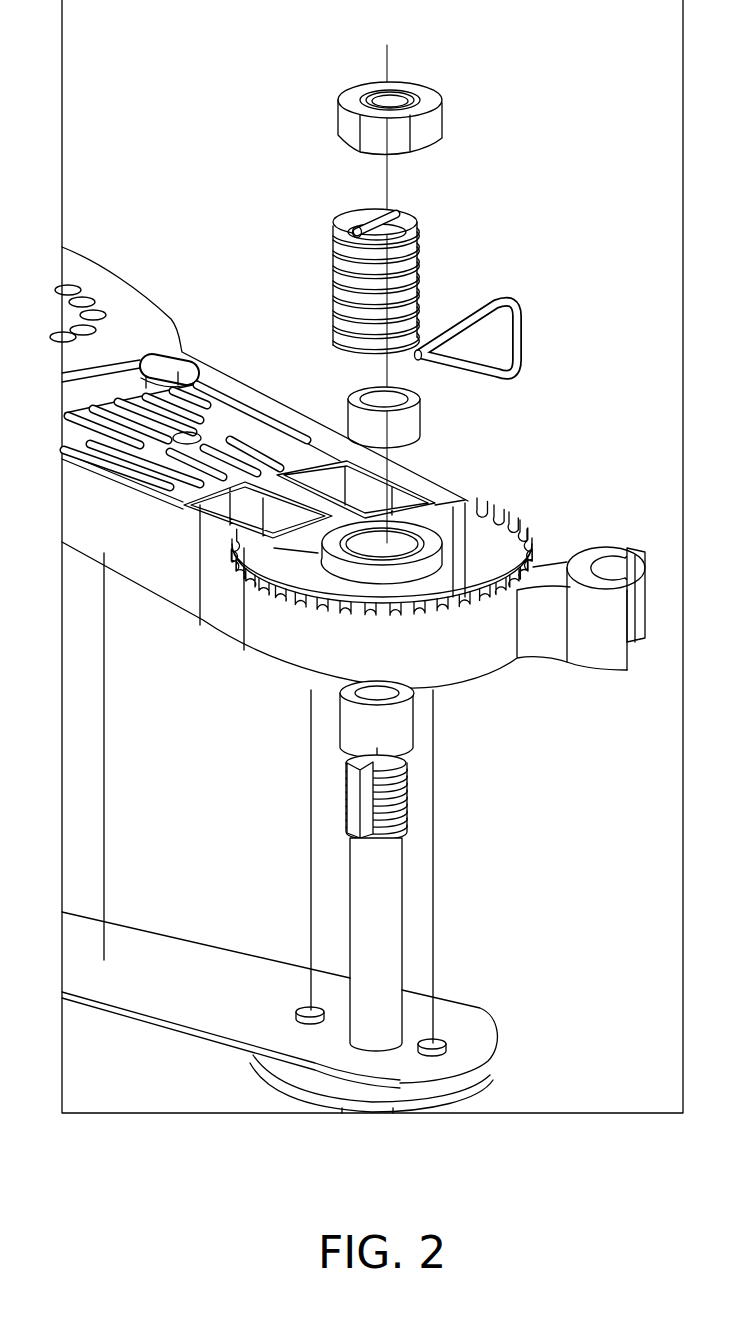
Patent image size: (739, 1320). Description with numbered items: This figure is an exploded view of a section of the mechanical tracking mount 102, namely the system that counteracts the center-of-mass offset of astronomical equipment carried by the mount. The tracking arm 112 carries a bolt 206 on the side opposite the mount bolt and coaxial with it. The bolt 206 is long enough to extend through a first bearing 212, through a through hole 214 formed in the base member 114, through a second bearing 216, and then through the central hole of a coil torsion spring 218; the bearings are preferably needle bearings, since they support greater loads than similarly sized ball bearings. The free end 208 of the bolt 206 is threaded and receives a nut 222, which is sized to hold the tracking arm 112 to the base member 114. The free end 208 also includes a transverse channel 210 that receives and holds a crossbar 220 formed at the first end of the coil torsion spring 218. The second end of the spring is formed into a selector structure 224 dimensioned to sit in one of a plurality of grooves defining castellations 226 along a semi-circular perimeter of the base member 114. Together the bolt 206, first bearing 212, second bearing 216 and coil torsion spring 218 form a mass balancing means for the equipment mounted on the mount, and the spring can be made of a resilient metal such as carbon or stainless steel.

The mechanical tracking mount 102 is at (223, 196).
The tracking arm 112 is at (137, 946).
The base member 114 is at (178, 324).
The bolt 206 is at (392, 895).
The free end 208 is at (415, 812).
The transverse channel 210 is at (365, 810).
The first bearing 212 is at (408, 733).
The through hole 214 is at (366, 545).
The second bearing 216 is at (408, 425).
The coil torsion spring 218 is at (410, 288).
The crossbar 220 is at (378, 219).
The nut 222 is at (437, 103).
The selector structure 224 is at (513, 318).
The castellations 226 is at (507, 506).